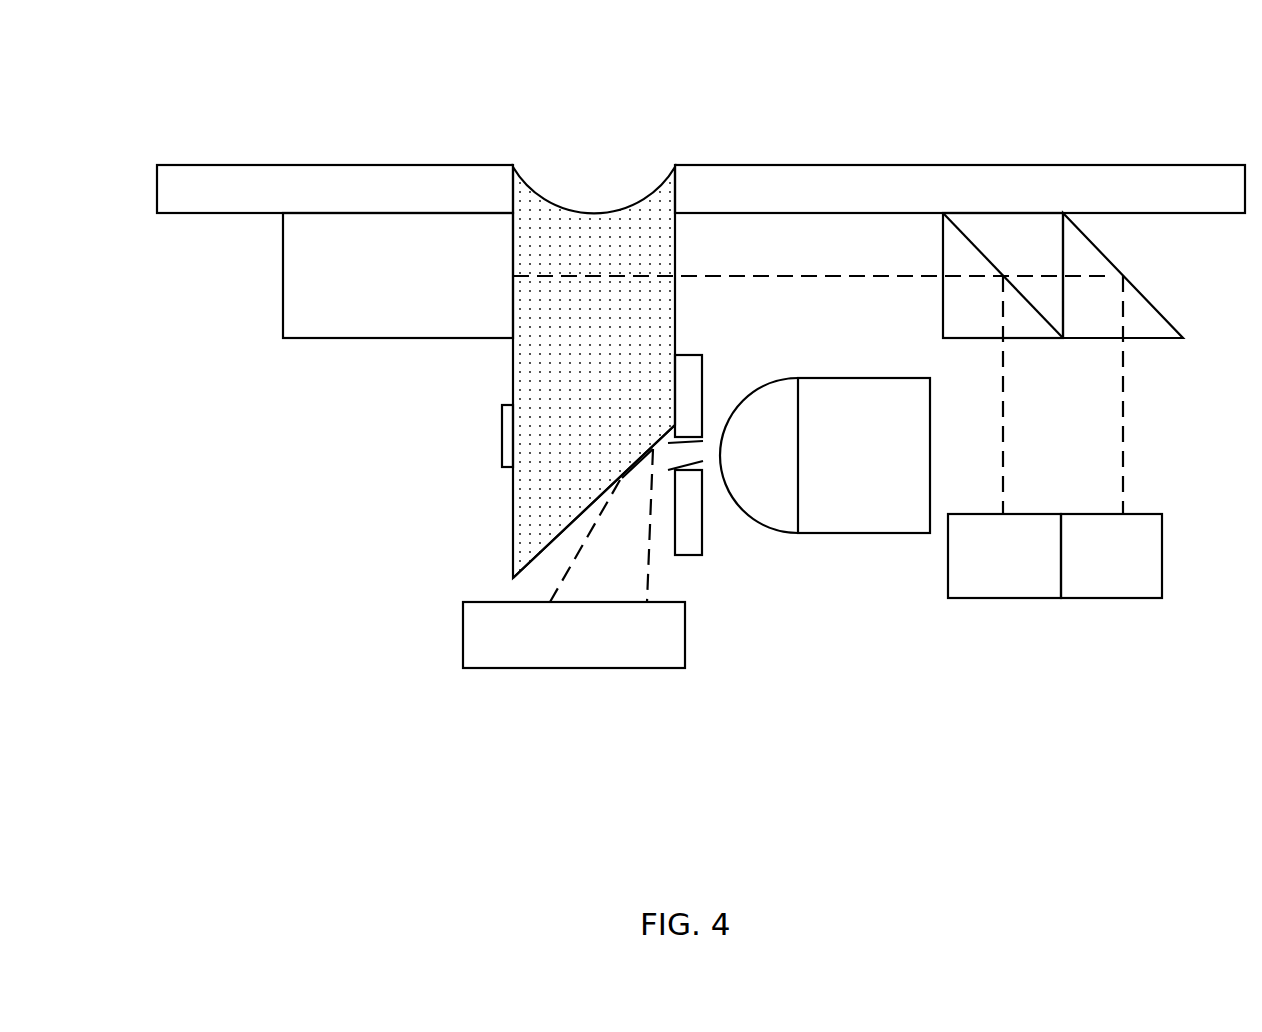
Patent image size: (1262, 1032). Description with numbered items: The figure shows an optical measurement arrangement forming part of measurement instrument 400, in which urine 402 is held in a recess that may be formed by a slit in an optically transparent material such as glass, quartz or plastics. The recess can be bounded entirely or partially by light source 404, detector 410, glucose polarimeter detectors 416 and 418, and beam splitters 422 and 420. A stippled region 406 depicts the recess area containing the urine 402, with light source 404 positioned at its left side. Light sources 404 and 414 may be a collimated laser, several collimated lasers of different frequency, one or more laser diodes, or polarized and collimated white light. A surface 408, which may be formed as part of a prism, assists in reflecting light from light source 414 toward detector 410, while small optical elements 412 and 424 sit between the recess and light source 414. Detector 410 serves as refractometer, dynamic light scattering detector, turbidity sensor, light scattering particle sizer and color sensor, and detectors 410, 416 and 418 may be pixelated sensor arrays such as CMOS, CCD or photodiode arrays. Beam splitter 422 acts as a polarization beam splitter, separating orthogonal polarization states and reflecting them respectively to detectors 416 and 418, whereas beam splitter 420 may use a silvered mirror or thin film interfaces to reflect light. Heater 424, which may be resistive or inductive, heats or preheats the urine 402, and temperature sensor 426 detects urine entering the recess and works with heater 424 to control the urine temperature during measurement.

The measurement instrument 400 is at (186, 73).
The urine 402 is at (541, 199).
The light source 404 is at (423, 292).
The light guide 406 is at (577, 278).
The surface 408 is at (599, 495).
The detector 410 is at (601, 649).
The lens element 412 is at (702, 542).
The light source 414 is at (889, 467).
The glucose polarimeter detector 416 is at (1032, 567).
The glucose polarimeter detector 418 is at (1139, 567).
The beam splitter 420 is at (1100, 243).
The beam splitter 422 is at (980, 247).
The heater 424 is at (690, 368).
The temperature sensor 426 is at (507, 437).